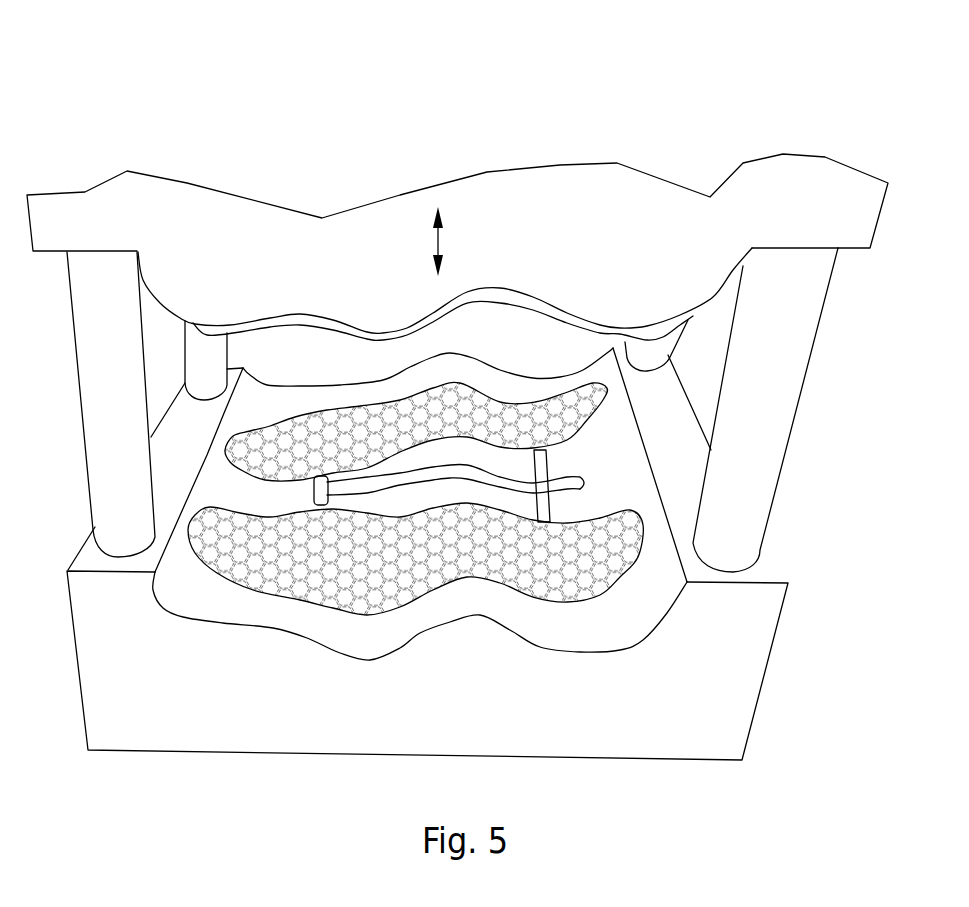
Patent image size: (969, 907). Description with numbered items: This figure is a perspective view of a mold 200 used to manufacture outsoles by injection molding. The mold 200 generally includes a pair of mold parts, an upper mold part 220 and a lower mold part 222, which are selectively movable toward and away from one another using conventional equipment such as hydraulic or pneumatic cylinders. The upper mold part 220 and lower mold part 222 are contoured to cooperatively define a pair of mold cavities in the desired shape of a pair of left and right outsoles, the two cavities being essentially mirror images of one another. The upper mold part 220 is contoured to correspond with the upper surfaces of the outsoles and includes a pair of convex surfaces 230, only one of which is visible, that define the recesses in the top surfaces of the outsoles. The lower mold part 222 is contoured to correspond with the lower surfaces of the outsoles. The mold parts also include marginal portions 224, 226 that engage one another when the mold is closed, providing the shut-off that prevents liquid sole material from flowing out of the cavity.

The mold 200 is at (694, 70).
The upper mold part 220 is at (850, 235).
The lower mold part 222 is at (783, 566).
The marginal portion 224 is at (478, 605).
The marginal portion 226 is at (712, 298).
The convex surface 230 is at (687, 322).